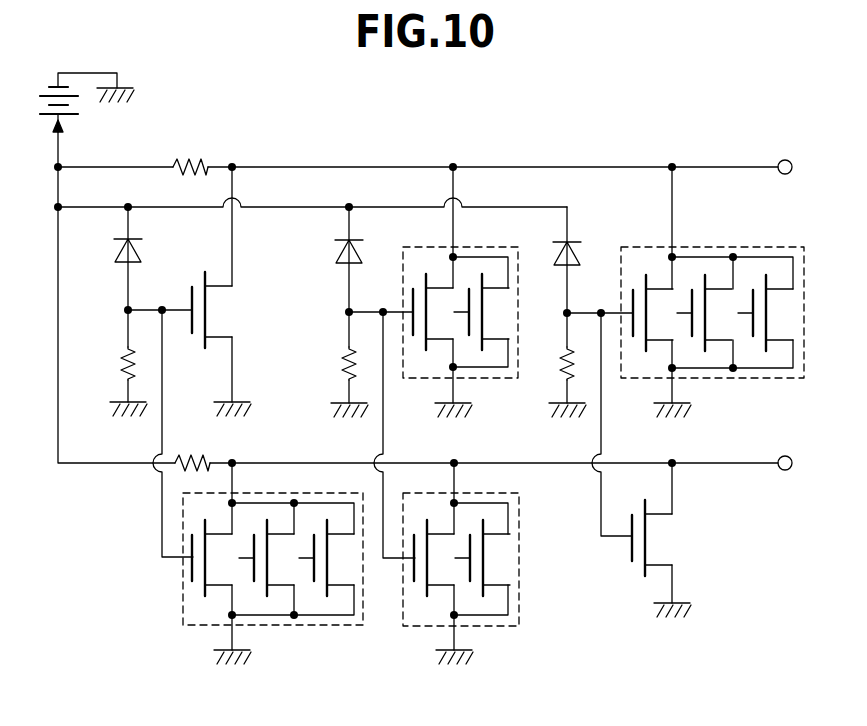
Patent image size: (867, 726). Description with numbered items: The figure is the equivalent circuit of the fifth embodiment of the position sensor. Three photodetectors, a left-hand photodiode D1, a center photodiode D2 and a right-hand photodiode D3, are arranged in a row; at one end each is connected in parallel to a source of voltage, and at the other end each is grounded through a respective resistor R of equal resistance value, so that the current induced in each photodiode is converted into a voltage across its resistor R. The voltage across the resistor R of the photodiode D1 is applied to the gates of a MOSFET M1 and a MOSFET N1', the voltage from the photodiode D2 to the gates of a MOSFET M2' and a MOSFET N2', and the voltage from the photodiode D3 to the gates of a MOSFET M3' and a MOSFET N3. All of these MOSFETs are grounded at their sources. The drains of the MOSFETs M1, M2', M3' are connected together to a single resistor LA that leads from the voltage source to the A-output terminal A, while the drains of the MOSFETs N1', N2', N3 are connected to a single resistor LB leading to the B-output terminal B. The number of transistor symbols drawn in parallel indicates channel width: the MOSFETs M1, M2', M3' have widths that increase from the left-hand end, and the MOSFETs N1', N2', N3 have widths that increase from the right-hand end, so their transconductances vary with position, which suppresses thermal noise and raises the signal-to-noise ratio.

The resistor LA is at (196, 152).
The resistor LB is at (212, 456).
The A-output terminal A is at (795, 168).
The B-output terminal B is at (795, 464).
The left-hand photodiode D1 is at (143, 250).
The center photodiode D2 is at (365, 250).
The right-hand photodiode D3 is at (583, 250).
The resistor R is at (112, 365).
The MOSFET M1 is at (237, 313).
The MOSFET M2' is at (438, 292).
The MOSFET M3' is at (685, 292).
The MOSFET N1' is at (269, 489).
The MOSFET N2' is at (457, 490).
The MOSFET N3 is at (676, 540).